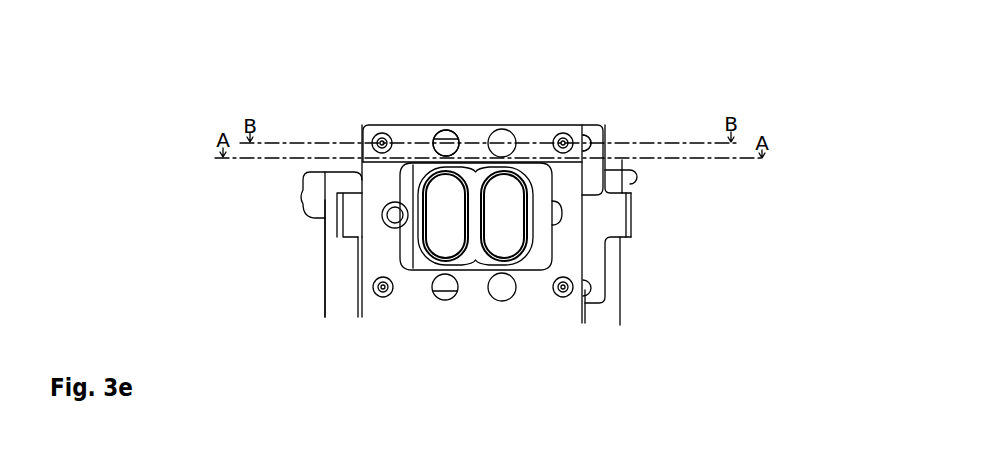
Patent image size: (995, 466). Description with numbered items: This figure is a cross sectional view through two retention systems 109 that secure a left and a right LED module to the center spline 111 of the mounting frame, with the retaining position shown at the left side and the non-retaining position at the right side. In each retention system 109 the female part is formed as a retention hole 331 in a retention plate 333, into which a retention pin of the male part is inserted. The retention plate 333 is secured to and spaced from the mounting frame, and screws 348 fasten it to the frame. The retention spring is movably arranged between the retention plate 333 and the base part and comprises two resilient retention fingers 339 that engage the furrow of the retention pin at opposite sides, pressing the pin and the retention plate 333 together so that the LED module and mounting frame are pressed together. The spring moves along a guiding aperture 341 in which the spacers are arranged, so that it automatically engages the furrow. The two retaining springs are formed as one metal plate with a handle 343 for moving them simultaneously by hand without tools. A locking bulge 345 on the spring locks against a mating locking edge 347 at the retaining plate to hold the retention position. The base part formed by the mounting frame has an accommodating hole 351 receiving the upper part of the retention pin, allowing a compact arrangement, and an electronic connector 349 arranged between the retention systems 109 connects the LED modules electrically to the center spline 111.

The retention system 109 is at (203, 74).
The center spline 111 is at (340, 287).
The retention hole 331 is at (455, 130).
The retention plate 333 is at (527, 128).
The retention finger 339 is at (447, 130).
The guiding aperture 341 is at (607, 127).
The handle 343 is at (632, 237).
The locking bulge 345 is at (565, 217).
The locking edge 347 is at (310, 175).
The screw 348 is at (386, 132).
The electronic connector 349 is at (435, 213).
The accommodating hole 351 is at (450, 130).